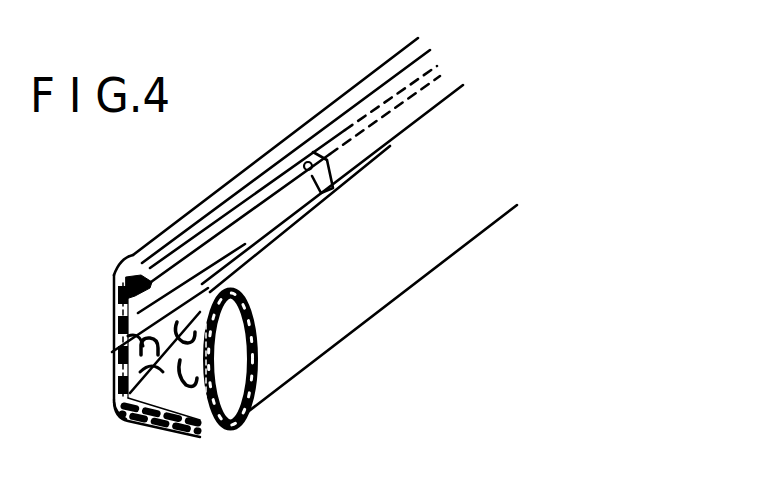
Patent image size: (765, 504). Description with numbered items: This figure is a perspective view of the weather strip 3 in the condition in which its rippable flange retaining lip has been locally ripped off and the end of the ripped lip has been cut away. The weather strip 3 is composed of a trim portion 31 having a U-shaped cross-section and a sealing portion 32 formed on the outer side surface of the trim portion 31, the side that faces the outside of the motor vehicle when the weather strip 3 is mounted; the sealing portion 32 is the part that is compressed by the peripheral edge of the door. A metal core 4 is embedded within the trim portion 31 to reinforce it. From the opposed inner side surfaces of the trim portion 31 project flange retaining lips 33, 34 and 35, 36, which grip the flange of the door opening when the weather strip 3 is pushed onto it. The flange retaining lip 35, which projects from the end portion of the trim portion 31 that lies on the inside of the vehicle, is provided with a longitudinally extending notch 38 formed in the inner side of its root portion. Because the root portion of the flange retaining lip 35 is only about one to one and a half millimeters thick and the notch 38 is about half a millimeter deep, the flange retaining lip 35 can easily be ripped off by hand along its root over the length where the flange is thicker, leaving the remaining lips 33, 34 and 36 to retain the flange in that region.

The weather strip 3 is at (133, 333).
The metal core 4 is at (123, 408).
The trim portion 31 is at (156, 428).
The sealing portion 32 is at (373, 285).
The flange retaining lip 33 is at (182, 322).
The flange retaining lip 34 is at (238, 418).
The flange retaining lip 35 is at (323, 180).
The flange retaining lip 36 is at (112, 352).
The notch 38 is at (307, 172).